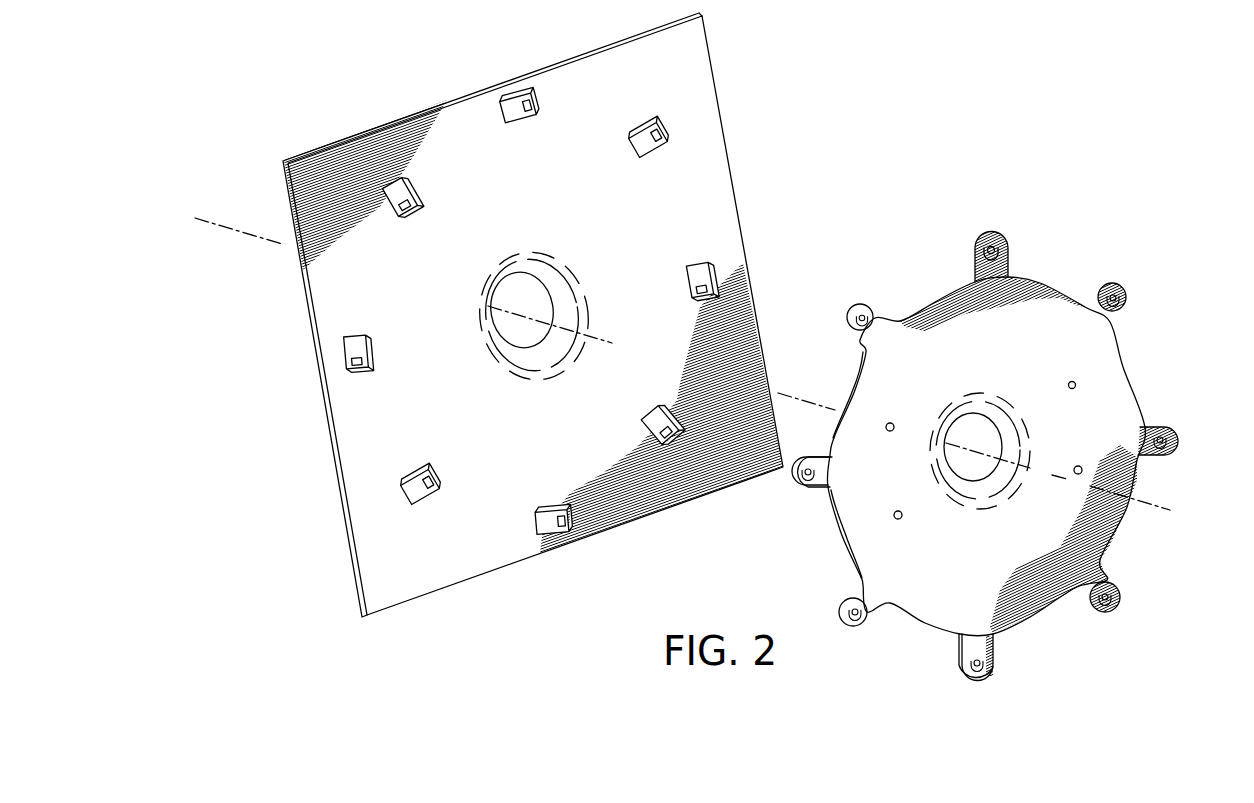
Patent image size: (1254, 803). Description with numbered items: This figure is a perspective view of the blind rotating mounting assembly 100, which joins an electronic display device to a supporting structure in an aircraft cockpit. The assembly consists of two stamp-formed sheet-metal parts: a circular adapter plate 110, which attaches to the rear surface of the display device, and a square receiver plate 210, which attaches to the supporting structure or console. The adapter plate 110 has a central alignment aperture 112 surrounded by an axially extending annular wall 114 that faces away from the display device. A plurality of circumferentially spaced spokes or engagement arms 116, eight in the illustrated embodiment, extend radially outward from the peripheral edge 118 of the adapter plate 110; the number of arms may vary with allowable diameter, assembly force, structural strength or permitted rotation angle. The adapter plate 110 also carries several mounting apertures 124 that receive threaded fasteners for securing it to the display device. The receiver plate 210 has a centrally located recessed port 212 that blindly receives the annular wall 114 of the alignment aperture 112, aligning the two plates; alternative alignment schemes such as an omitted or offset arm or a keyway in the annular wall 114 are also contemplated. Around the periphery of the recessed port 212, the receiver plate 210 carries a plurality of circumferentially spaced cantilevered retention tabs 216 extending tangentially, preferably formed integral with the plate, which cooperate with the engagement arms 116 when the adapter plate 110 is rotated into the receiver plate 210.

The mounting assembly 100 is at (918, 126).
The adapter plate 110 is at (1117, 380).
The central alignment aperture 112 is at (960, 480).
The annular wall 114 is at (1013, 437).
The engagement arms 116 is at (975, 247).
The peripheral edge 118 is at (1120, 523).
The mounting apertures 124 is at (887, 423).
The receiver plate 210 is at (707, 55).
The recessed port 212 is at (513, 347).
The retention tabs 216 is at (413, 208).